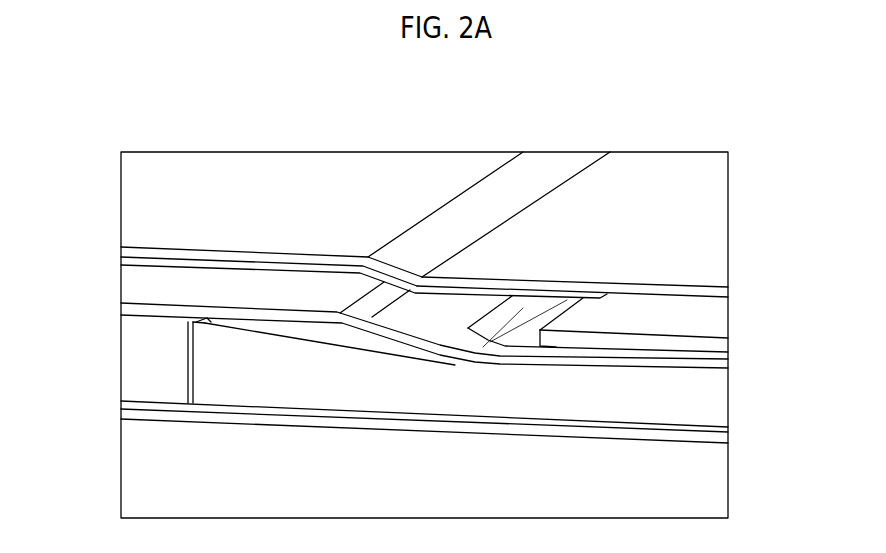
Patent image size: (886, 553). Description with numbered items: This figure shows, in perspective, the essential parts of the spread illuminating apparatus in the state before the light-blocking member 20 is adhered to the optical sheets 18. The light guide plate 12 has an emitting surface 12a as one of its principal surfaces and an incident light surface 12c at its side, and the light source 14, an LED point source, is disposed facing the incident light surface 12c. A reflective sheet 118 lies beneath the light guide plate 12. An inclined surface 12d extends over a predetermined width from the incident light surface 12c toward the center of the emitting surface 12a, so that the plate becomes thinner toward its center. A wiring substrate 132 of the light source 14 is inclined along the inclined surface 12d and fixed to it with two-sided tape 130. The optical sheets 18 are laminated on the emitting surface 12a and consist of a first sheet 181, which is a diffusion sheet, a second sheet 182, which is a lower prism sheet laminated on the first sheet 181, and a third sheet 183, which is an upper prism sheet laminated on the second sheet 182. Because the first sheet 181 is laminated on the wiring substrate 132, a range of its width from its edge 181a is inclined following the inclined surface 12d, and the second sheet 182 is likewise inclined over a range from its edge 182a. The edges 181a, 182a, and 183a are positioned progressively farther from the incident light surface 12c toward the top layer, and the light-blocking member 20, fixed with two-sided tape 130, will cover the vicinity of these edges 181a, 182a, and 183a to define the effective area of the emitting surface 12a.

The light-blocking member 20 is at (274, 177).
The two-sided tape 130 is at (137, 273).
The wiring substrate 132 is at (137, 288).
The light source 14 is at (137, 365).
The light guide plate 12 is at (712, 410).
The emitting surface 12a is at (400, 350).
The incident light surface 12c is at (186, 362).
The inclined surface 12d is at (322, 340).
The reflective sheet 118 is at (418, 437).
The optical sheets 18 is at (496, 238).
The first sheet 181 is at (720, 365).
The second sheet 182 is at (722, 357).
The third sheet 183 is at (715, 318).
The edge of first sheet 181a is at (372, 317).
The edge of second sheet 182a is at (468, 328).
The edge of third sheet 183a is at (540, 330).